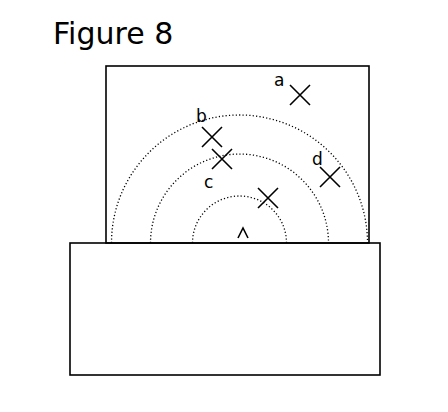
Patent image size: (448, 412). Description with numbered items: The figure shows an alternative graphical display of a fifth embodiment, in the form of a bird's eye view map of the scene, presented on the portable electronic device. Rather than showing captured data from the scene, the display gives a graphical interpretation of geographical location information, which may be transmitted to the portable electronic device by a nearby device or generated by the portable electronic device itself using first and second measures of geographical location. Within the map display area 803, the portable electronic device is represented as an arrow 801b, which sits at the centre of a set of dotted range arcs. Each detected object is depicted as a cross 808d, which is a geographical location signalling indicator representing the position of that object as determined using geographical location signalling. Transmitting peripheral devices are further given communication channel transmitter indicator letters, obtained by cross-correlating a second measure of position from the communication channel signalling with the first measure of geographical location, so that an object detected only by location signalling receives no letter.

The substrate / sensor block 803 is at (127, 90).
The arrow 801b is at (238, 236).
The cross 808d is at (278, 193).